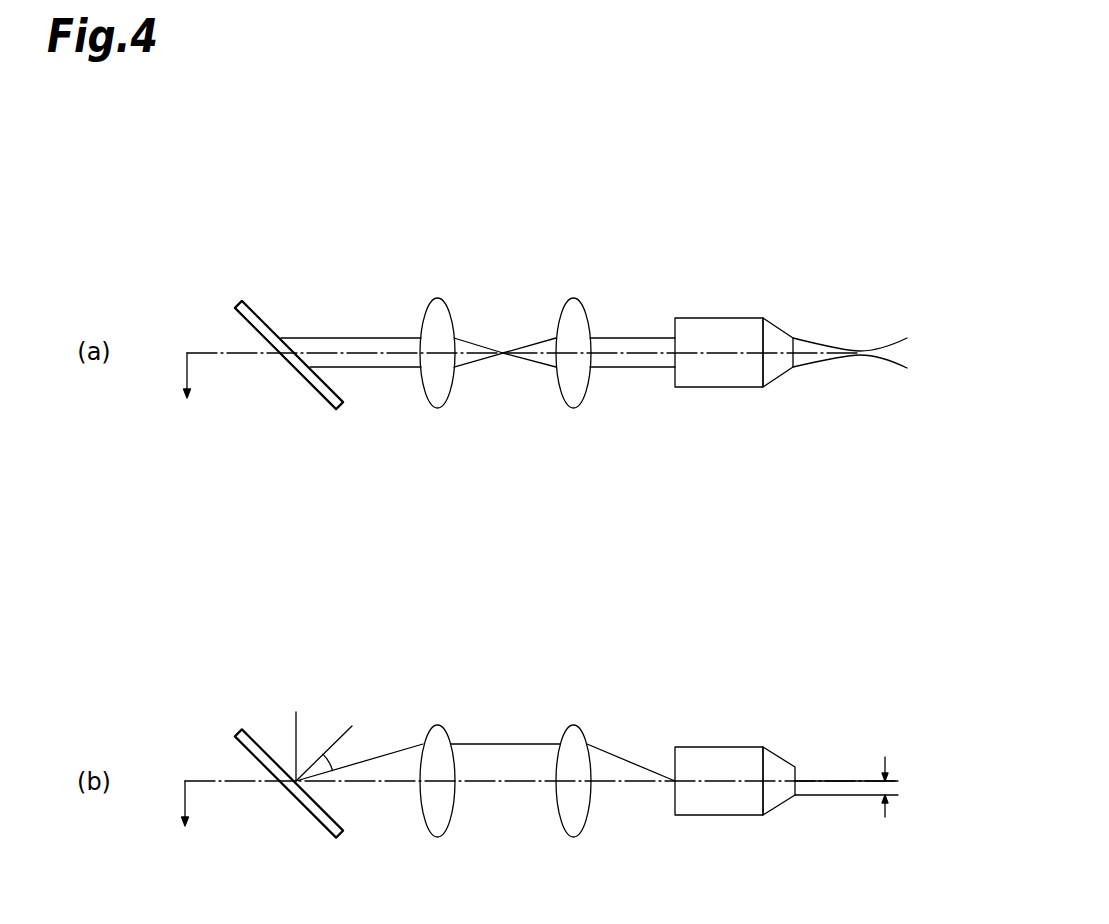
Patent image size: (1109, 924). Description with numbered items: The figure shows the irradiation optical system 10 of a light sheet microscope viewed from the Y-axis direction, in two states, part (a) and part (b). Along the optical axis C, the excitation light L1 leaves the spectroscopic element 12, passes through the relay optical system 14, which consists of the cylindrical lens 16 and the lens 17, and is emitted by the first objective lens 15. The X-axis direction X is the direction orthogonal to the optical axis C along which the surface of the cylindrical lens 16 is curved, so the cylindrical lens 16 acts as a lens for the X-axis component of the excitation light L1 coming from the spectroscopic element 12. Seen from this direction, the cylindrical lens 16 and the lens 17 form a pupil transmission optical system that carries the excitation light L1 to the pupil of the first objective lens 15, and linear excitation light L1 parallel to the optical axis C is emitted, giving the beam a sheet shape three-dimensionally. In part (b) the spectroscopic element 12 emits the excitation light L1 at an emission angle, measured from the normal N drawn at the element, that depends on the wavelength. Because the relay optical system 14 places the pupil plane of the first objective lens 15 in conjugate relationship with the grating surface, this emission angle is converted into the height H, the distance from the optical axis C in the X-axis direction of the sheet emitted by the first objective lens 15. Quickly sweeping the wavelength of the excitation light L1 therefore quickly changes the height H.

The irradiation optical system 10 is at (661, 222).
The spectroscopic element 12 is at (262, 301).
The relay optical system 14 is at (597, 233).
The first objective lens 15 is at (718, 318).
The cylindrical lens 16 is at (437, 297).
The lens 17 is at (573, 297).
The excitation light L1 is at (368, 336).
The optical axis C is at (207, 348).
The X-axis direction X is at (164, 620).
The normal line of mirror N is at (338, 727).
The height H is at (887, 788).